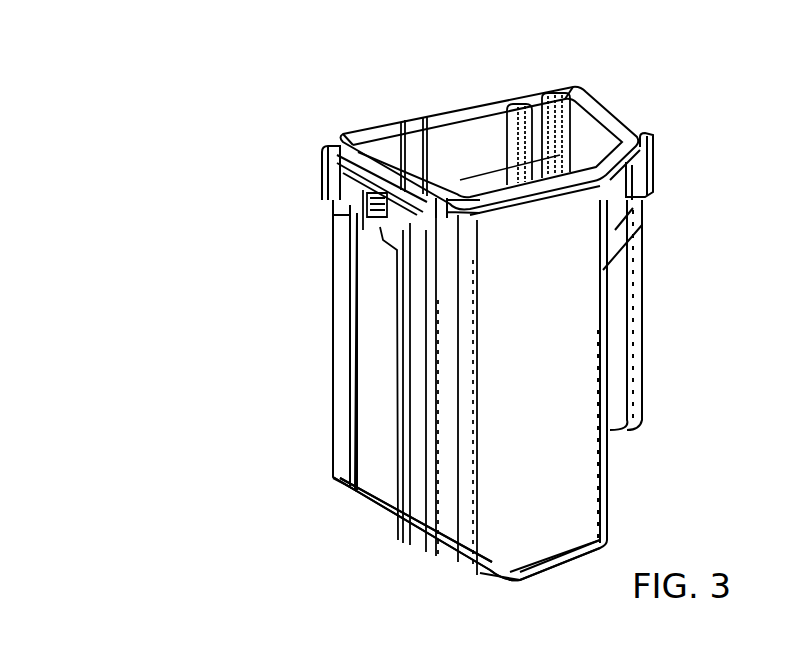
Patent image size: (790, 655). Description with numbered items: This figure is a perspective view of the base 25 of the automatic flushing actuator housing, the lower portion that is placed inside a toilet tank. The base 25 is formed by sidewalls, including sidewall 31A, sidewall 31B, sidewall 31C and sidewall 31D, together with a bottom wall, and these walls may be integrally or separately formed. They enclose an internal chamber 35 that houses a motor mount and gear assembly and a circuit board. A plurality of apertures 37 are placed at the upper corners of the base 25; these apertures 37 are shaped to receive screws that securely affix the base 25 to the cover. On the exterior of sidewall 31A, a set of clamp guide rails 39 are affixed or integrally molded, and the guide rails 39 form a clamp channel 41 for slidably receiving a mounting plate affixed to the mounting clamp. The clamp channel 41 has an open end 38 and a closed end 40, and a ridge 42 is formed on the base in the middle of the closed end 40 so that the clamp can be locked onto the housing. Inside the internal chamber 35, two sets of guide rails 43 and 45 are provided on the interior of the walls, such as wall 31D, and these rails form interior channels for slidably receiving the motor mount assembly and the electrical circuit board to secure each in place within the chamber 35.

The base 25 is at (147, 355).
The sidewall 31A is at (432, 520).
The sidewall 31B is at (617, 507).
The sidewall 31C is at (640, 333).
The sidewall 31D is at (487, 123).
The internal chamber 35 is at (473, 120).
The apertures 37 is at (333, 152).
The open end 38 is at (370, 508).
The clamp guide rails 39 is at (347, 345).
The closed end 40 is at (327, 215).
The clamp channel 41 is at (360, 422).
The ridge 42 is at (330, 172).
The guide rails 43 is at (522, 105).
The guide rails 45 is at (572, 118).